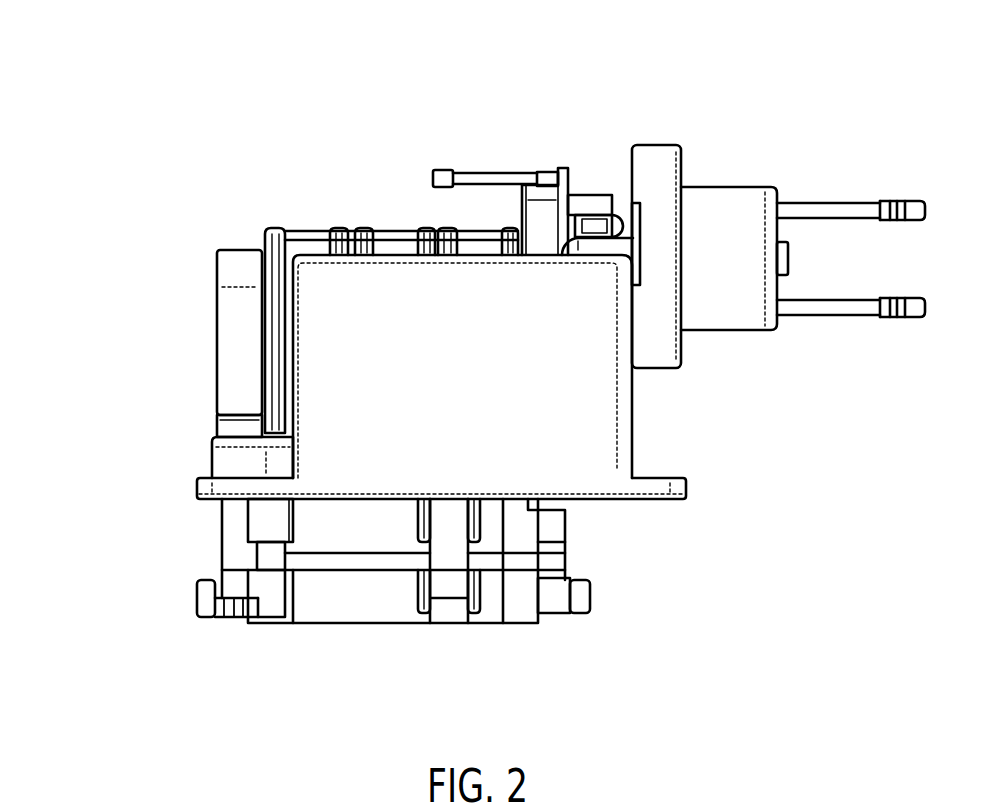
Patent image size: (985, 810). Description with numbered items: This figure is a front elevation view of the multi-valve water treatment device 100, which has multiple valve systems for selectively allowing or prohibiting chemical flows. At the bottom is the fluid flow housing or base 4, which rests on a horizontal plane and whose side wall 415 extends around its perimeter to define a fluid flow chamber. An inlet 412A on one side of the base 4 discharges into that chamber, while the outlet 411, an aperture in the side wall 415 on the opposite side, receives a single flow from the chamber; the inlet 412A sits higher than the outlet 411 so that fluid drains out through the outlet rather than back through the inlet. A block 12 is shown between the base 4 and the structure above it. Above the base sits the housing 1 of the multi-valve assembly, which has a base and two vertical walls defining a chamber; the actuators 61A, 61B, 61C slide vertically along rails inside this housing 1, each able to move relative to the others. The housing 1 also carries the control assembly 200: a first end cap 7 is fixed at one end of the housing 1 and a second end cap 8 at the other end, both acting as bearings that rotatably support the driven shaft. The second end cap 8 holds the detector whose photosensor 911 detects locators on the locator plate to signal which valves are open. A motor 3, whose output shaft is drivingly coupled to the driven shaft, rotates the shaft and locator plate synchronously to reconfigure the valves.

The water treatment device 100 is at (168, 153).
The control assembly 200 is at (892, 116).
The housing 1 is at (328, 370).
The motor 3 is at (725, 197).
The base 4 is at (398, 603).
The first end cap 7 is at (233, 280).
The second end cap 8 is at (540, 212).
The mounting block 12 is at (328, 537).
The actuator 61A is at (305, 230).
The actuator 61B is at (390, 230).
The actuator 61C is at (475, 230).
The outlet 411 is at (553, 603).
The inlet 412A is at (205, 603).
The side wall 415 is at (328, 603).
The photosensor 911 is at (590, 200).